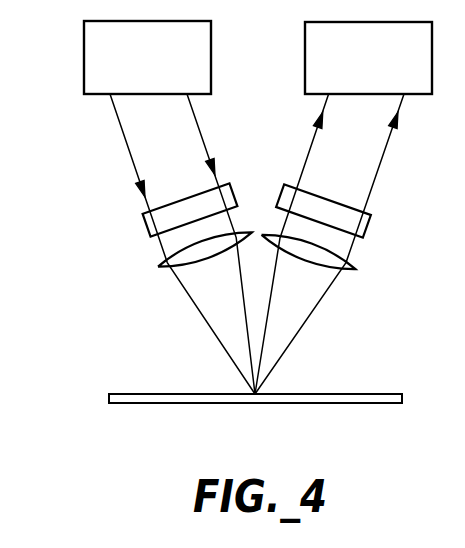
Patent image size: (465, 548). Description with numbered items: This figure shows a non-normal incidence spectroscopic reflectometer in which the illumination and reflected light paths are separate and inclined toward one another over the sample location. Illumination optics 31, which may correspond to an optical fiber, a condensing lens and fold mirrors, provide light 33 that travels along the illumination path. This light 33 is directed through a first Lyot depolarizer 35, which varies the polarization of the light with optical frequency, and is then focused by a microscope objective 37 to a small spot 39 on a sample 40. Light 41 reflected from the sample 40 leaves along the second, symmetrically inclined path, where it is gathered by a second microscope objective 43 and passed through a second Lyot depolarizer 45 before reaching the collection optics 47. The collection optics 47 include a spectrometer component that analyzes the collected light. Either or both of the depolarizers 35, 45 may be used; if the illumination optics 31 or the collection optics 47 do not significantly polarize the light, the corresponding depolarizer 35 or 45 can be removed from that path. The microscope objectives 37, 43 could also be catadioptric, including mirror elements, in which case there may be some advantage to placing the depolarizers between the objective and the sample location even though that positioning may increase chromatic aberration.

The illumination optics 31 is at (83, 60).
The light 33 is at (135, 122).
The first Lyot depolarizer 35 is at (142, 227).
The microscope objective 37 is at (166, 272).
The spot 39 is at (262, 396).
The sample 40 is at (383, 393).
The reflected light 41 is at (297, 310).
The second microscope objective 43 is at (345, 278).
The second Lyot depolarizer 45 is at (372, 228).
The collection optics 47 is at (305, 60).